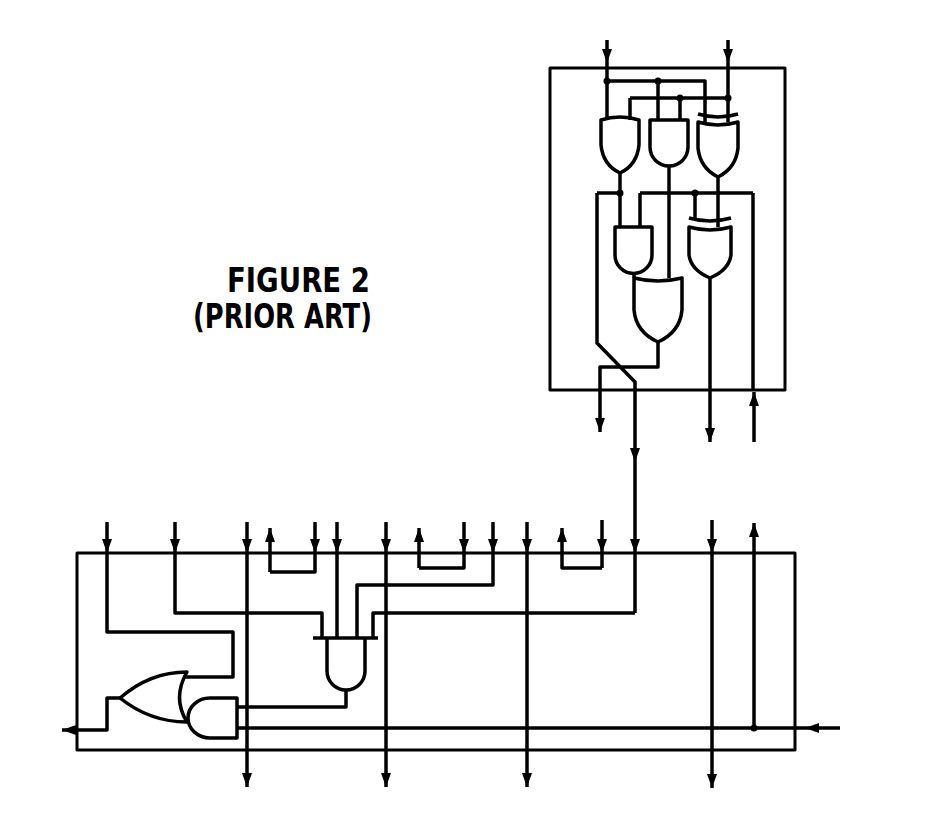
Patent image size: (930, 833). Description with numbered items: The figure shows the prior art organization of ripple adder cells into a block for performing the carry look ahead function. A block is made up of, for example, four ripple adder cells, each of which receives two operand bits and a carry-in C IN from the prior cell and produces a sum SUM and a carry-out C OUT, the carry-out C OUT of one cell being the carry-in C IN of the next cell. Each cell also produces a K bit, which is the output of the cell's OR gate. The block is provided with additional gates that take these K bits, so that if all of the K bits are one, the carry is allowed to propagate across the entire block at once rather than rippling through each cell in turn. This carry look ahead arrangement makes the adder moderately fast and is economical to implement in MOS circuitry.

The carry-out signal C OUT is at (285, 570).
The carry-in signal C IN is at (430, 521).
The K bit K is at (399, 569).
The sum signal SUM is at (387, 632).